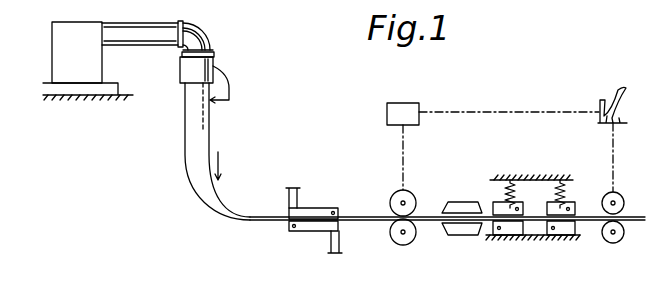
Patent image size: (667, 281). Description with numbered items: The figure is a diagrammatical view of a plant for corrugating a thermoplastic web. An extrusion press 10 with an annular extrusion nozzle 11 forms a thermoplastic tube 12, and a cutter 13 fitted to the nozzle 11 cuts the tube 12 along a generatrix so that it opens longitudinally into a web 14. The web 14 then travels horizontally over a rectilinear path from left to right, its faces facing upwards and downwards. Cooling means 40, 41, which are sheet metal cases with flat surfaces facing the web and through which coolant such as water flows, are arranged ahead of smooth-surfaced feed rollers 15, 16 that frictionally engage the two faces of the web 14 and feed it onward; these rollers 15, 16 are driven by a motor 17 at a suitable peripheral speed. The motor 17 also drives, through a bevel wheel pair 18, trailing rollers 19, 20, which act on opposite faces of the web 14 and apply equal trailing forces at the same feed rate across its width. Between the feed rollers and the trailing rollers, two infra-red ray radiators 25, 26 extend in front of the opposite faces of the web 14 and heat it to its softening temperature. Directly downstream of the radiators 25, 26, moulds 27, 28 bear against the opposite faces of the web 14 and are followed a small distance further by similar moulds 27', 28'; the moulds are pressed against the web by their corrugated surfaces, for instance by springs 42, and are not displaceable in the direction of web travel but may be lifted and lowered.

The extrusion press 10 is at (85, 55).
The annular extrusion nozzle 11 is at (188, 70).
The thermoplastic tube 12 is at (188, 125).
The cutter 13 is at (230, 92).
The web 14 is at (263, 224).
The feed roller 15 is at (393, 196).
The feed roller 16 is at (403, 246).
The motor 17 is at (388, 112).
The bevel wheel pair 18 is at (619, 133).
The trailing roller 19 is at (619, 193).
The trailing roller 20 is at (620, 241).
The infra-red ray radiator 25 is at (458, 202).
The infra-red ray radiator 26 is at (464, 236).
The mould 27 is at (498, 179).
The mould 27' is at (573, 182).
The mould 28 is at (515, 248).
The mould 28' is at (572, 246).
The cooling means 40 is at (320, 212).
The cooling means 41 is at (318, 233).
The springs 42 is at (558, 190).